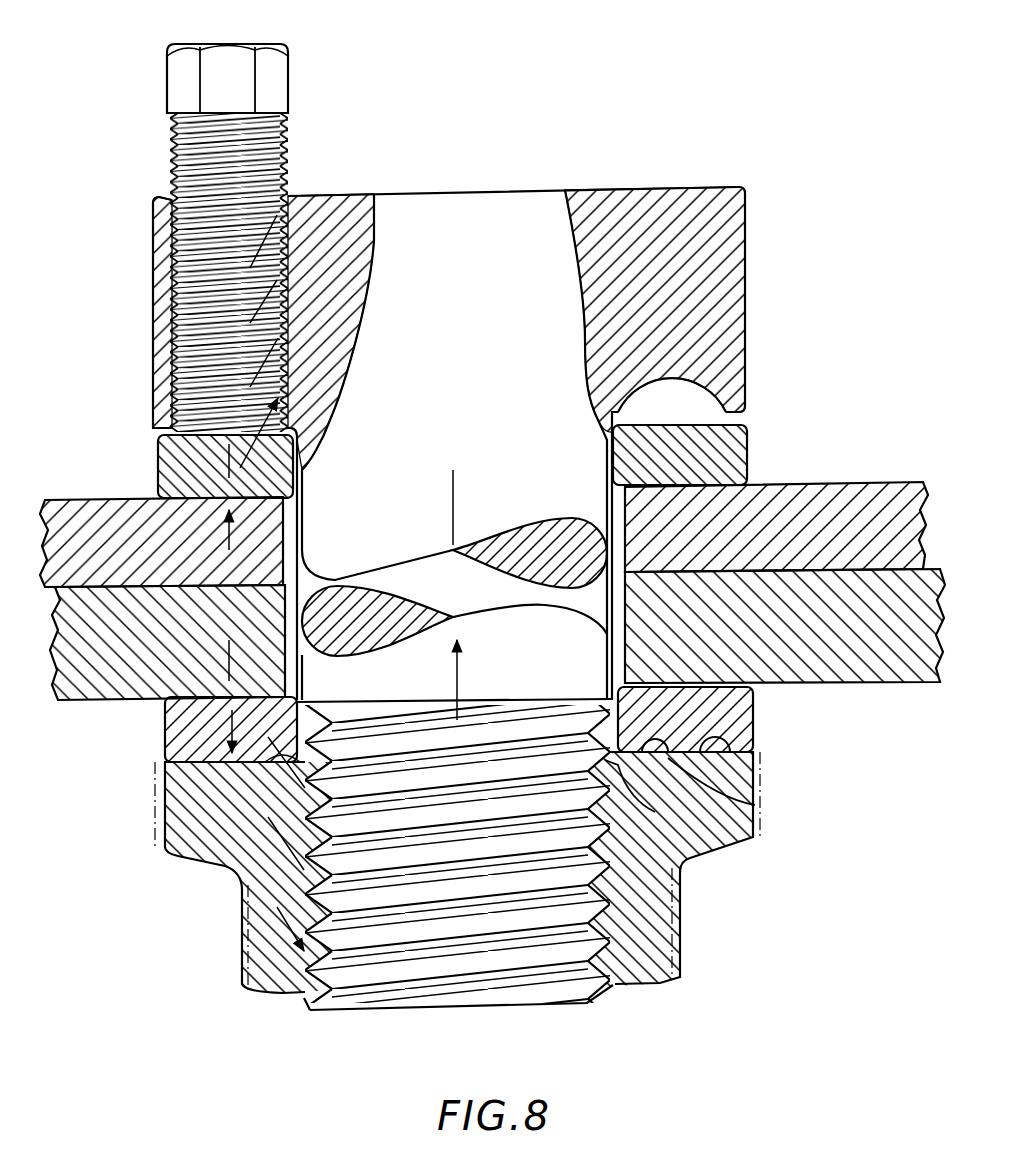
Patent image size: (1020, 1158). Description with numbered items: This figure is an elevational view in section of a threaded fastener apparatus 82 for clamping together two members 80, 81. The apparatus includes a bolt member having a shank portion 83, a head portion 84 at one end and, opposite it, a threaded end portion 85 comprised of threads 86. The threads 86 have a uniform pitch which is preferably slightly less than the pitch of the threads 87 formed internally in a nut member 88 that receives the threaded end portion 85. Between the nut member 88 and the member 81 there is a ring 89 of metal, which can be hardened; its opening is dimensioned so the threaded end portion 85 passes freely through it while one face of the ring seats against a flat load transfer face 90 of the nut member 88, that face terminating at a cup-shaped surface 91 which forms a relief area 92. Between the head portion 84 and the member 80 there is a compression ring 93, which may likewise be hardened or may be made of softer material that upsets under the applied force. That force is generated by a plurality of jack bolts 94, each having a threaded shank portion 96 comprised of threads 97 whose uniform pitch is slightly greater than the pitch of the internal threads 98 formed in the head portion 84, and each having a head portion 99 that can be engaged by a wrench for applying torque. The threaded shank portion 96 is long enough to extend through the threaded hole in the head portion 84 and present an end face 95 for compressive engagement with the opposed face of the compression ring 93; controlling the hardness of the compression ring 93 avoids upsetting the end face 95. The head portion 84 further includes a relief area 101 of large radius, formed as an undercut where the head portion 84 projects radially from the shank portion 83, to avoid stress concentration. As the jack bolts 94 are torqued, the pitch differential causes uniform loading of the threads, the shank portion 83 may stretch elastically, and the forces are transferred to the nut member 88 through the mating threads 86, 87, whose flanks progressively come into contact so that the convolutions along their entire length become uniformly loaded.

The member 80 is at (842, 487).
The member 81 is at (828, 684).
The threaded fastener apparatus 82 is at (502, 411).
The shank portion 83 is at (530, 658).
The head portion 84 is at (746, 277).
The threaded end portion 85 is at (535, 1003).
The threads 86 is at (452, 1005).
The threads 87 is at (607, 918).
The nut member 88 is at (503, 886).
The ring 89 is at (754, 722).
The flat load transfer face 90 is at (757, 754).
The cup-shaped surface 91 is at (755, 805).
The relief area 92 is at (652, 796).
The compression ring 93 is at (749, 450).
The jack bolts 94 is at (232, 275).
The end face 95 is at (196, 440).
The threaded shank portion 96 is at (300, 175).
The threads 97 is at (290, 150).
The internal threads 98 is at (180, 255).
The head portion 99 is at (290, 76).
The relief area 101 is at (703, 389).